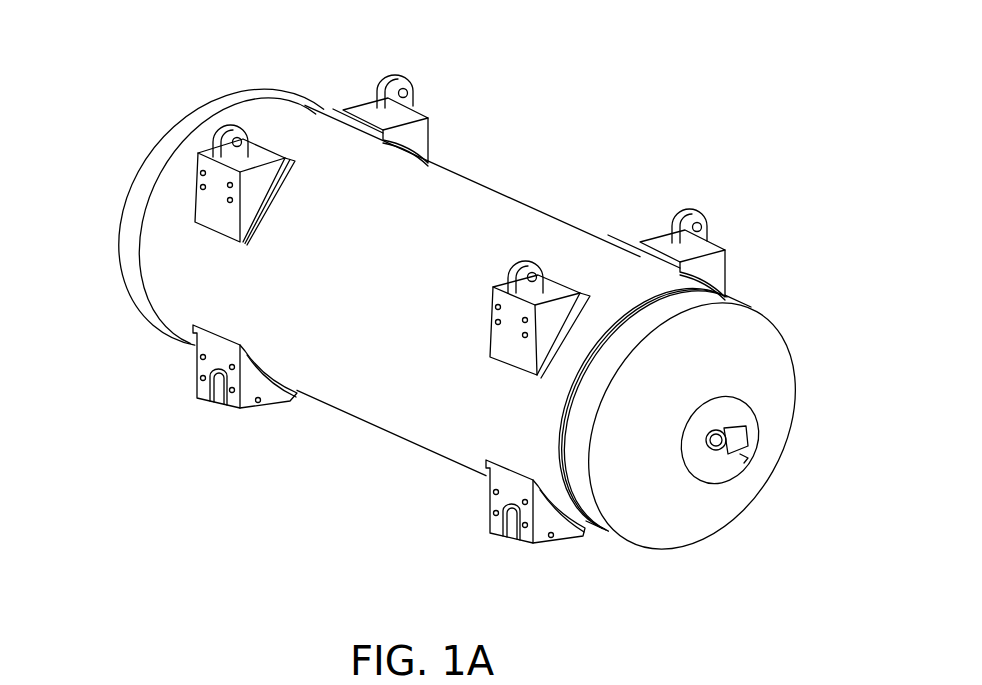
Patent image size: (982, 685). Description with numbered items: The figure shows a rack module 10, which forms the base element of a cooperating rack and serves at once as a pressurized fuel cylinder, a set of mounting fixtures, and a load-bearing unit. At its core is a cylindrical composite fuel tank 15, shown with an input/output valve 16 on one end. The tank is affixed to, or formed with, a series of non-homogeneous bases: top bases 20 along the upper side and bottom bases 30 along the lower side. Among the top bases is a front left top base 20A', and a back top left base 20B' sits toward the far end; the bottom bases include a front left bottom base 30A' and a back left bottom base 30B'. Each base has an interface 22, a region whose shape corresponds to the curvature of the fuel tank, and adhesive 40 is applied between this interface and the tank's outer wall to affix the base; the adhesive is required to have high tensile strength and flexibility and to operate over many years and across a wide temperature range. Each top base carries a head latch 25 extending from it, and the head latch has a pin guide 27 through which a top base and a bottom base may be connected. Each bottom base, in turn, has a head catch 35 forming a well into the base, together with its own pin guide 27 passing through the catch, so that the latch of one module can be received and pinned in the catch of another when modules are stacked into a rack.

The rack module 10 is at (448, 317).
The cylindrical composite fuel tank 15 is at (402, 294).
The input/output valve 16 is at (738, 408).
The top base 20 is at (440, 197).
The front left top base 20A' is at (494, 319).
The back top left base 20B' is at (181, 185).
The interface 22 is at (293, 185).
The head latch 25 is at (402, 75).
The pin guide 27 is at (252, 133).
The bottom base 30 is at (322, 434).
The front left bottom base 30A' is at (486, 501).
The back left bottom base 30B' is at (178, 376).
The head catch 35 is at (218, 408).
The adhesive 40 is at (588, 306).